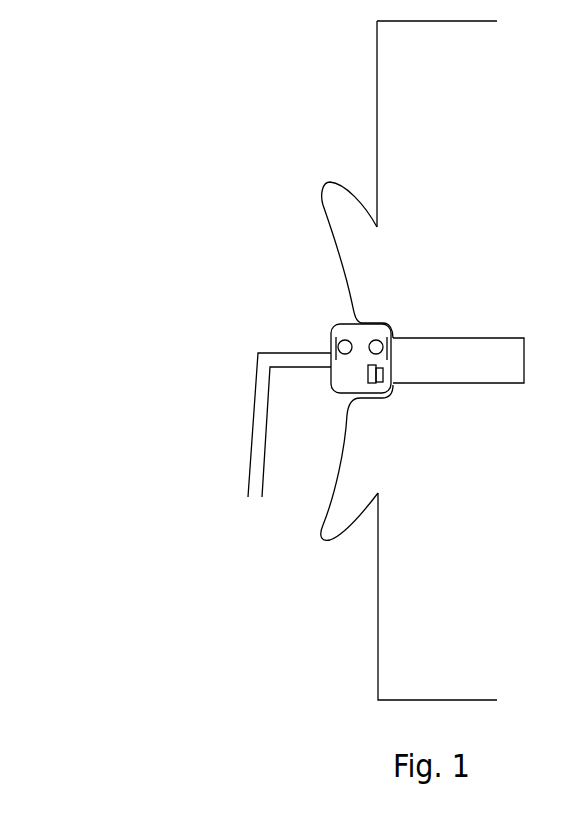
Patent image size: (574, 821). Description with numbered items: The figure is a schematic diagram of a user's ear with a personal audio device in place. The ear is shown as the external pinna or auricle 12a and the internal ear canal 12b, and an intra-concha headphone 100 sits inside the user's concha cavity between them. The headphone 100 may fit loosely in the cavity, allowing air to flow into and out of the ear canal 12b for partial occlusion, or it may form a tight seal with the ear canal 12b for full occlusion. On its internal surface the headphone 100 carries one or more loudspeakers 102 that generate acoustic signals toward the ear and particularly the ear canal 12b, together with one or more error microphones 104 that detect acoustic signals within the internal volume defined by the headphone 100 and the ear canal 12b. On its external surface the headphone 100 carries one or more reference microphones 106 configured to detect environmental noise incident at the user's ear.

The intra-concha headphone 100 is at (255, 345).
The loudspeaker 102 is at (383, 383).
The error microphone 104 is at (376, 338).
The reference microphone 106 is at (343, 338).
The pinna 12a is at (328, 199).
The ear canal 12b is at (490, 372).